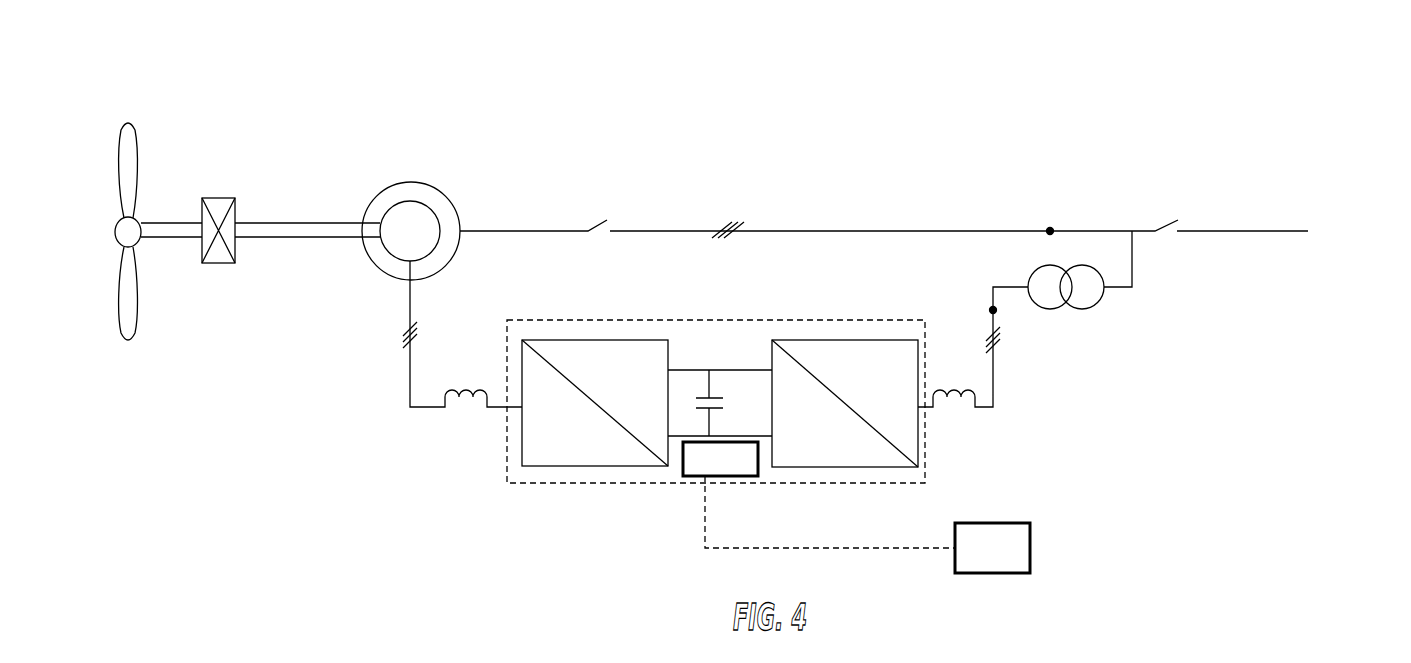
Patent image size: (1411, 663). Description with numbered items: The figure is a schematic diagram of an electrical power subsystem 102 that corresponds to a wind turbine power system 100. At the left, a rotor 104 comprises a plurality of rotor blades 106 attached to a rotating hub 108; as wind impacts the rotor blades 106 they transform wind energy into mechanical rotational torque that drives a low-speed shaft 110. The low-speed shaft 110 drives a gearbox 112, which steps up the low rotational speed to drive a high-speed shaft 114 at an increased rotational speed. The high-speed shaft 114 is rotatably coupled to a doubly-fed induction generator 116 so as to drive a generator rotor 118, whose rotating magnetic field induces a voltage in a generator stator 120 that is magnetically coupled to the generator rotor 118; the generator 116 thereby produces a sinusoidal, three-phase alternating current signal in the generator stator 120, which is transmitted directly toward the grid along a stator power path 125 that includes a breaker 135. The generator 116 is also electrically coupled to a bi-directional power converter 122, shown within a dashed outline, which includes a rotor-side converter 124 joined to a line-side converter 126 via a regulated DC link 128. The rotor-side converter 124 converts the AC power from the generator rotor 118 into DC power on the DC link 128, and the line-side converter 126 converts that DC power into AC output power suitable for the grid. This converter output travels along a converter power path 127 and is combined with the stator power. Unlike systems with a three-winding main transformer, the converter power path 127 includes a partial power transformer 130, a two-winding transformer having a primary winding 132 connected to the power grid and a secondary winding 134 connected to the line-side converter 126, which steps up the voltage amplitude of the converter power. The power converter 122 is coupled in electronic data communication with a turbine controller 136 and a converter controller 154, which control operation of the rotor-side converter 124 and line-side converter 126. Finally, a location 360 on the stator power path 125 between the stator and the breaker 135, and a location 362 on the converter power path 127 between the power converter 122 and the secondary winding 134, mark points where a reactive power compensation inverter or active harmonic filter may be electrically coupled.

The wind turbine power system 100 is at (146, 84).
The electrical power subsystem 102 is at (1057, 108).
The rotor 104 is at (100, 225).
The rotor blades 106 is at (130, 158).
The rotating hub 108 is at (120, 243).
The low-speed shaft 110 is at (157, 233).
The gearbox 112 is at (215, 198).
The high-speed shaft 114 is at (290, 233).
The doubly-fed induction generator 116 is at (440, 178).
The generator rotor 118 is at (385, 255).
The generator stator 120 is at (373, 197).
The bi-directional power converter 122 is at (655, 485).
The rotor-side converter 124 is at (587, 340).
The stator power path 125 is at (780, 230).
The line-side converter 126 is at (838, 340).
The converter power path 127 is at (997, 378).
The regulated DC link 128 is at (715, 360).
The partial power transformer 130 is at (1085, 312).
The primary winding 132 is at (1100, 275).
The secondary winding 134 is at (1040, 275).
The breaker 135 is at (1183, 222).
The turbine controller 136 is at (1009, 563).
The converter controller 154 is at (737, 474).
The location on stator power path 360 is at (1050, 225).
The location on converter power path 362 is at (990, 305).